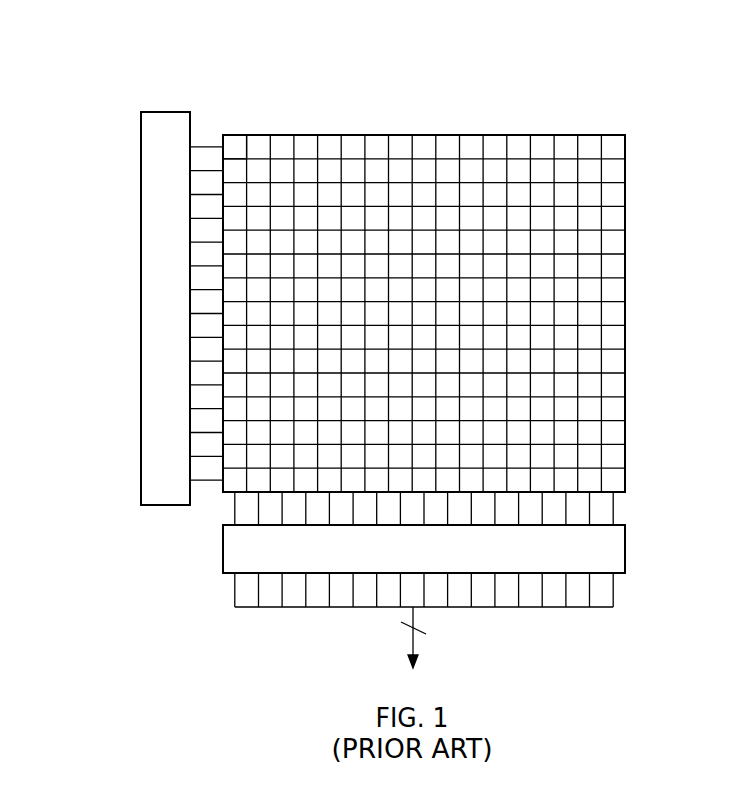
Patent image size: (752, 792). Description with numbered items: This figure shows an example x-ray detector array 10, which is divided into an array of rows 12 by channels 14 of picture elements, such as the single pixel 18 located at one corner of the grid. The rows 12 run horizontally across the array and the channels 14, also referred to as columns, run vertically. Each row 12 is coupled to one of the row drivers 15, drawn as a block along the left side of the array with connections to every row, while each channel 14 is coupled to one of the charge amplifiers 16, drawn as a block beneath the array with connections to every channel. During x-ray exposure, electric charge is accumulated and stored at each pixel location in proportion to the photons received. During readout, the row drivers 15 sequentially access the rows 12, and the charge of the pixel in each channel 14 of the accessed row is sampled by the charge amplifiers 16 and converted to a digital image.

The detector array 10 is at (620, 70).
The rows 12 is at (642, 140).
The channels 14 is at (624, 115).
The row drivers 15 is at (163, 303).
The charge amplifiers 16 is at (628, 546).
The pixel 18 is at (228, 130).